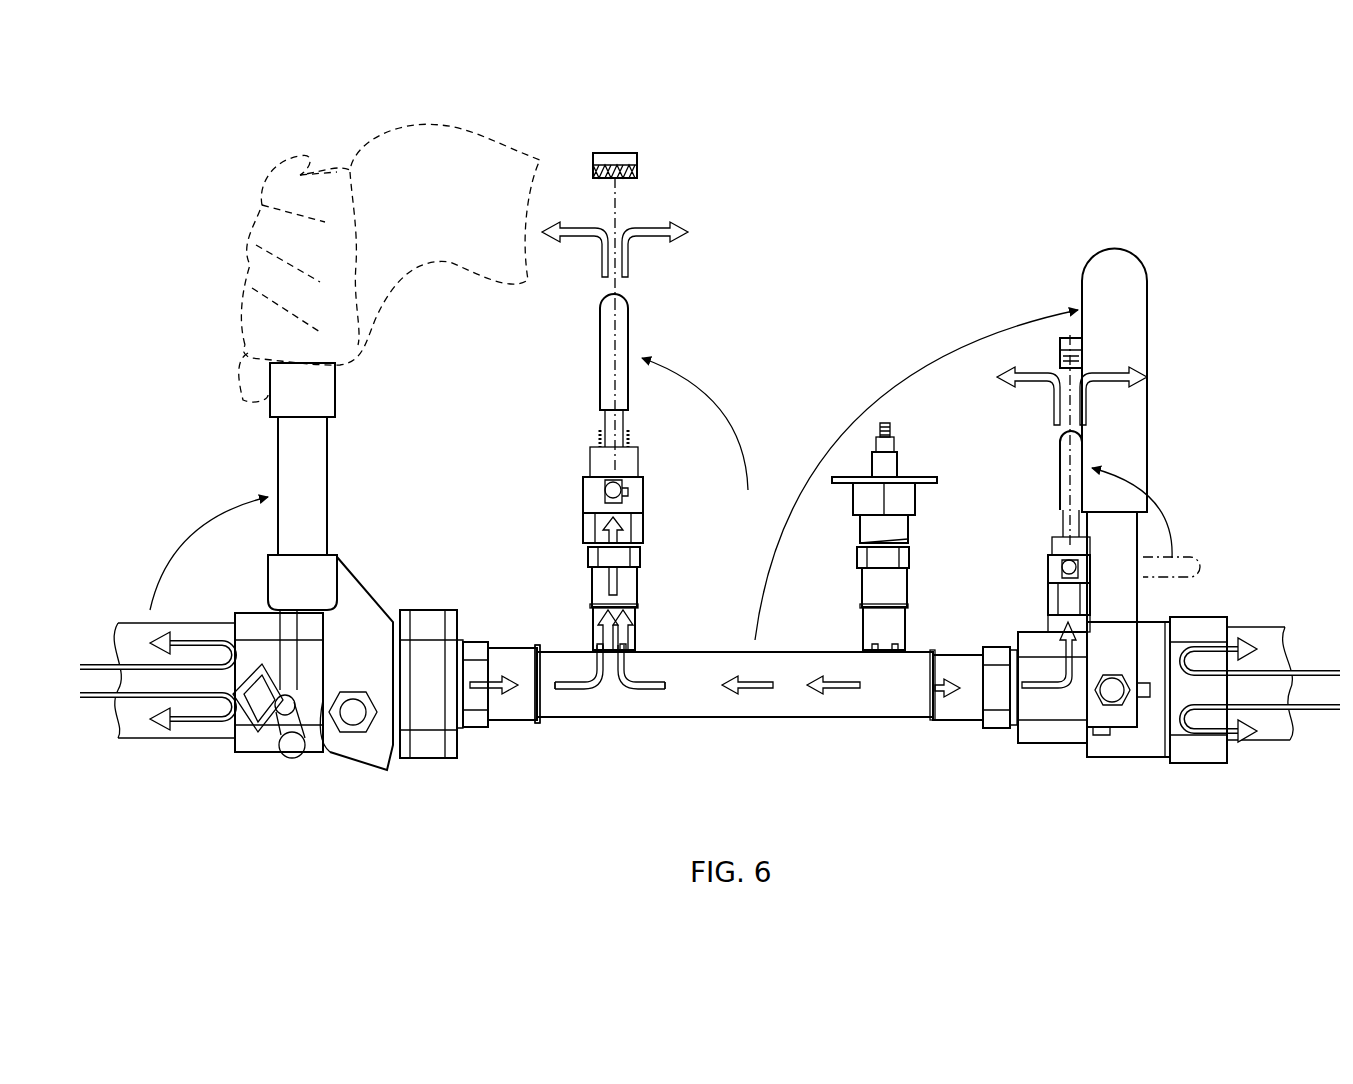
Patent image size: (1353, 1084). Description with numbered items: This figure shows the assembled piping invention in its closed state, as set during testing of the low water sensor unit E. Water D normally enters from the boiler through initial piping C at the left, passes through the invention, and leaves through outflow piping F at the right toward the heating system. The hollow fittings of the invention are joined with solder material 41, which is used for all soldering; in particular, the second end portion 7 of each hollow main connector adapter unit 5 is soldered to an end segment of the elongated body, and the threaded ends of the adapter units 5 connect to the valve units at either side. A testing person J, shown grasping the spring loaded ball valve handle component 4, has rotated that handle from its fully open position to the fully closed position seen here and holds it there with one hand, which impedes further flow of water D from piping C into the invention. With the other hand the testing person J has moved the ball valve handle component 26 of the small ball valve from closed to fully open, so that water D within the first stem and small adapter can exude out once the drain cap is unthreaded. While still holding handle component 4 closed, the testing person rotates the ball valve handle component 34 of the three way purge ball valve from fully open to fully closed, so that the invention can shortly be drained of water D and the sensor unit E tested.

The spring loaded ball valve handle component 4 is at (320, 448).
The hollow main connector adapter unit 5 is at (476, 725).
The second end portion 7 is at (520, 630).
The ball valve handle component 26 is at (625, 322).
The ball valve handle component 34 is at (1135, 318).
The solder material 41 is at (636, 606).
The initial piping C is at (172, 738).
The water D is at (622, 222).
The low water sensor unit E is at (905, 497).
The outflow piping F is at (1278, 738).
The testing person J is at (475, 168).